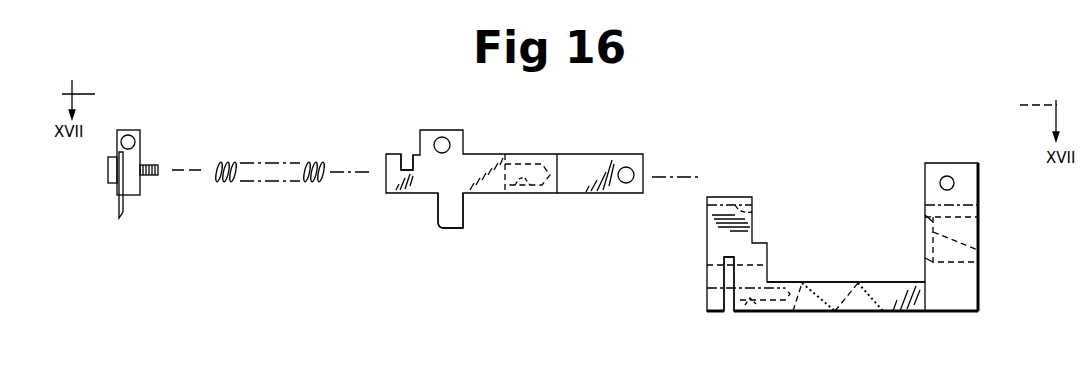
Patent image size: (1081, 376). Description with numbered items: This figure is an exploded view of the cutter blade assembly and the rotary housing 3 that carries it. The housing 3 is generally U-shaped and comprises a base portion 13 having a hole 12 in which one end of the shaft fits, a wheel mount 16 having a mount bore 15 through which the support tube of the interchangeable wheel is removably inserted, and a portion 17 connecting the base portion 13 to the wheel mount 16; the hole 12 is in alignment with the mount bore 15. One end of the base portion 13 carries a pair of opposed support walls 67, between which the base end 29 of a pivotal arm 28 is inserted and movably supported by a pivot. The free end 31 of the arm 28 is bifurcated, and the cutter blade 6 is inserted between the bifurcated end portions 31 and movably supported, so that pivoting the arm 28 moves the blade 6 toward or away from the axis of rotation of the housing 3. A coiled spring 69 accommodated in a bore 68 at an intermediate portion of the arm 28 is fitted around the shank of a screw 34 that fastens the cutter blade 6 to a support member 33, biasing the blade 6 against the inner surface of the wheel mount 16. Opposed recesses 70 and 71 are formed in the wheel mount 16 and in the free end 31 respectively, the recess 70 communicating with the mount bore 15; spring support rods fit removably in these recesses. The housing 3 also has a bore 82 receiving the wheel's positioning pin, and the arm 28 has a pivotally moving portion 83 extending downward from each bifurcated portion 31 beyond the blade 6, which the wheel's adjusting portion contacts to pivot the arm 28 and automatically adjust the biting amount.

The rotary housing 3 is at (822, 320).
The cutter blade 6 is at (119, 205).
The hole 12 is at (976, 245).
The base portion 13 is at (970, 295).
The mount bore 15 is at (757, 210).
The wheel mount 16 is at (716, 233).
The connecting portion 17 is at (876, 312).
The pivotal arm 28 is at (559, 149).
The base end 29 is at (612, 162).
The free end 31 is at (407, 183).
The support member 33 is at (135, 157).
The screw 34 is at (108, 174).
The support walls 67 is at (972, 180).
The bore 68 is at (531, 190).
The coiled spring 69 is at (309, 162).
The recess 70 is at (727, 258).
The recess 71 is at (406, 162).
The bore 82 is at (757, 306).
The pivotally moving portion 83 is at (458, 218).